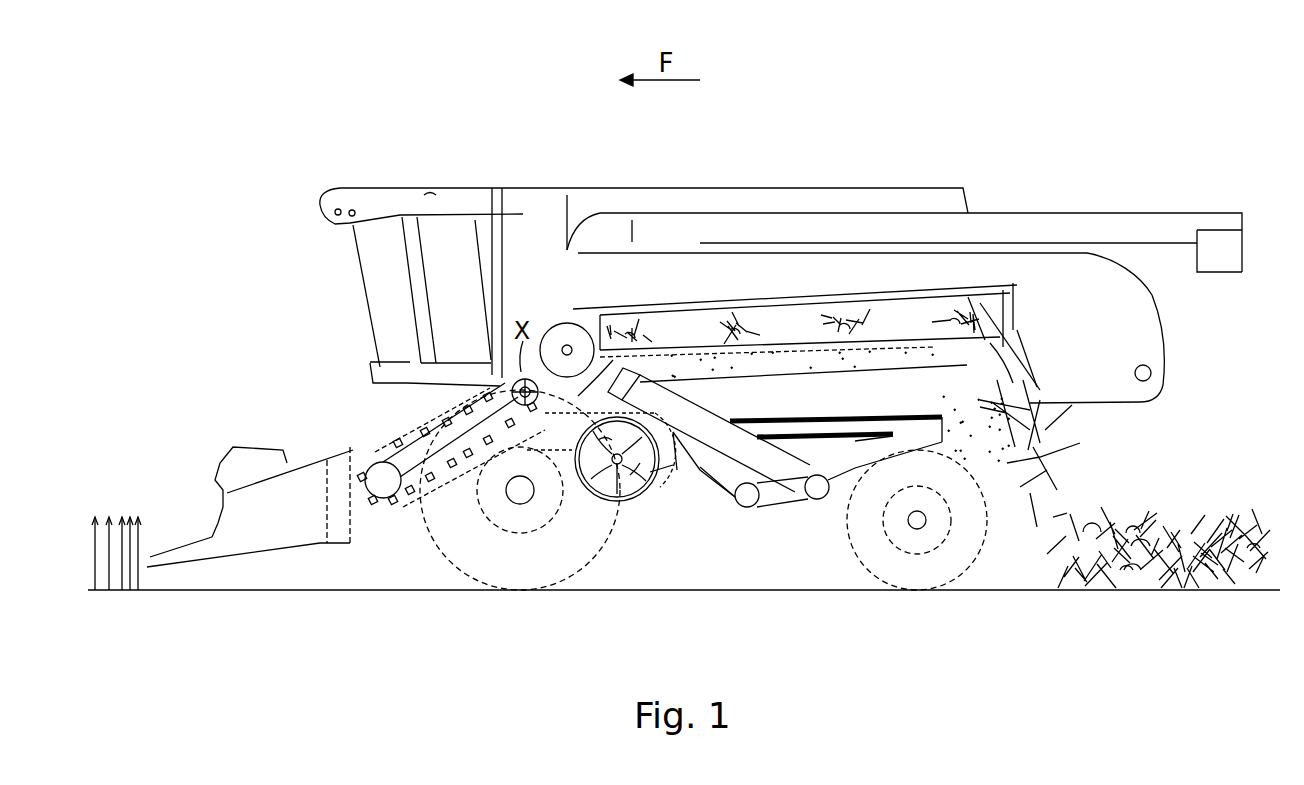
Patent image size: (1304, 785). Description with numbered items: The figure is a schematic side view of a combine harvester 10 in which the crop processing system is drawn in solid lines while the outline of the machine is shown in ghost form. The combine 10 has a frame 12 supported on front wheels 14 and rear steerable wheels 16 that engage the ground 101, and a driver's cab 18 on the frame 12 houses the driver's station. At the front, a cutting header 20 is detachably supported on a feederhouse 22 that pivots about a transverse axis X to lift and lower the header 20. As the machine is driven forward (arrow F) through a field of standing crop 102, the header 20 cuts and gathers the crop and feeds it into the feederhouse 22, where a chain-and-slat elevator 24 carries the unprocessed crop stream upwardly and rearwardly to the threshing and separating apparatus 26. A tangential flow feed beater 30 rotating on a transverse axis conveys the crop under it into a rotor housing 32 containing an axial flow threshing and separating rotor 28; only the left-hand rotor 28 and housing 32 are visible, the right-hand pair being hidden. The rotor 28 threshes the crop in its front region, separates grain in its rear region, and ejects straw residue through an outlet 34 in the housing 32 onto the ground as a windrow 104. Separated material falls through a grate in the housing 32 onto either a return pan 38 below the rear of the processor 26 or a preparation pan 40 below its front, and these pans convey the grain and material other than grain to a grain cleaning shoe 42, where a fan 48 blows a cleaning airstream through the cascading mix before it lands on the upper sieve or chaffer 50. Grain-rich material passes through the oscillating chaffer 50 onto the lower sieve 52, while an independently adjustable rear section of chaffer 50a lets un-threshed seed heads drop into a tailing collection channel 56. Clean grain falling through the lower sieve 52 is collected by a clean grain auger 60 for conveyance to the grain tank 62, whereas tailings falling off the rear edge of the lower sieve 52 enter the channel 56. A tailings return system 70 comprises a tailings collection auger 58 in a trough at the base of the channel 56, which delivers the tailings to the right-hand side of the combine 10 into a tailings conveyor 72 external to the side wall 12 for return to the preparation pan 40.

The combine harvester 10 is at (352, 138).
The frame 12 is at (707, 503).
The front wheels 14 is at (450, 585).
The rear steerable wheels 16 is at (963, 590).
The driver's cab 18 is at (447, 187).
The cutting header 20 is at (240, 430).
The feederhouse 22 is at (373, 440).
The elevator 24 is at (405, 497).
The threshing and separating apparatus 26 is at (622, 310).
The axial flow threshing and separating rotor 28 is at (773, 303).
The feed beater 30 is at (555, 323).
The rotor housing 32 is at (698, 307).
The outlet 34 is at (1027, 347).
The return pan 38 is at (910, 418).
The preparation pan 40 is at (577, 423).
The grain cleaning shoe 42 is at (790, 500).
The fan 48 is at (640, 500).
The upper sieve or chaffer 50 is at (807, 418).
The rear section of chaffer 50a is at (897, 412).
The lower sieve 52 is at (860, 440).
The tailing collection channel 56 is at (860, 470).
The tailings collection auger 58 is at (818, 500).
The clean grain auger 60 is at (747, 509).
The grain tank 62 is at (690, 187).
The tailings return system 70 is at (681, 470).
The tailings conveyor 72 is at (800, 470).
The ground 101 is at (242, 594).
The standing crop 102 is at (135, 515).
The windrow 104 is at (1198, 525).